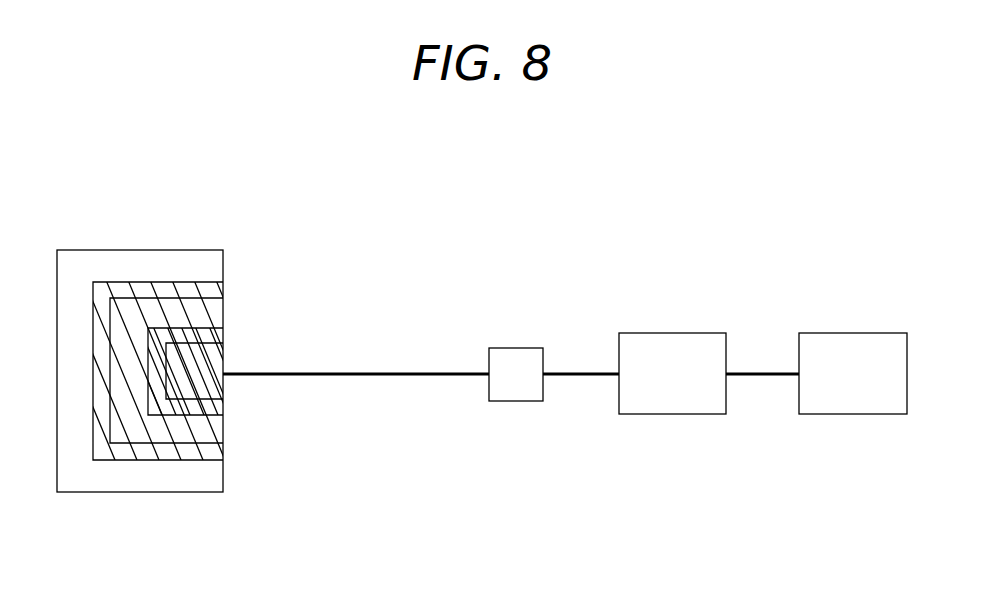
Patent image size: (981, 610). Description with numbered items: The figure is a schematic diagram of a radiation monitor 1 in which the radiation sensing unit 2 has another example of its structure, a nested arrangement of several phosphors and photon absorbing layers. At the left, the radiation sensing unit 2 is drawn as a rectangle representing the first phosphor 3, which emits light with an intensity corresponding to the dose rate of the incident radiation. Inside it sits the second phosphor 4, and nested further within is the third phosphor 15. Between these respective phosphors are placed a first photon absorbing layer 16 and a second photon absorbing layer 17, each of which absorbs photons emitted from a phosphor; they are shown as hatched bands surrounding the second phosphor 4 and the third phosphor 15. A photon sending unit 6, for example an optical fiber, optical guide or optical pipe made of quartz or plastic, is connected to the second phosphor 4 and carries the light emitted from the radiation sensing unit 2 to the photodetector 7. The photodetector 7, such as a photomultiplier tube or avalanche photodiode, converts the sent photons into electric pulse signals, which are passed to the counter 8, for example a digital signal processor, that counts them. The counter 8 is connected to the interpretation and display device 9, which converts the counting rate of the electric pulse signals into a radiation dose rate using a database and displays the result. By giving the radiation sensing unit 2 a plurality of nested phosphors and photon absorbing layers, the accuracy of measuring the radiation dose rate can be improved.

The radiation monitor 1 is at (321, 294).
The radiation sensing unit 2 is at (141, 250).
The first phosphor 3 is at (82, 478).
The second phosphor 4 is at (133, 430).
The photon sending unit 6 is at (363, 360).
The photodetector 7 is at (512, 372).
The counter 8 is at (658, 352).
The interpretation and display device 9 is at (848, 352).
The third phosphor 15 is at (213, 384).
The first photon absorbing layer 16 is at (183, 455).
The second photon absorbing layer 17 is at (201, 328).